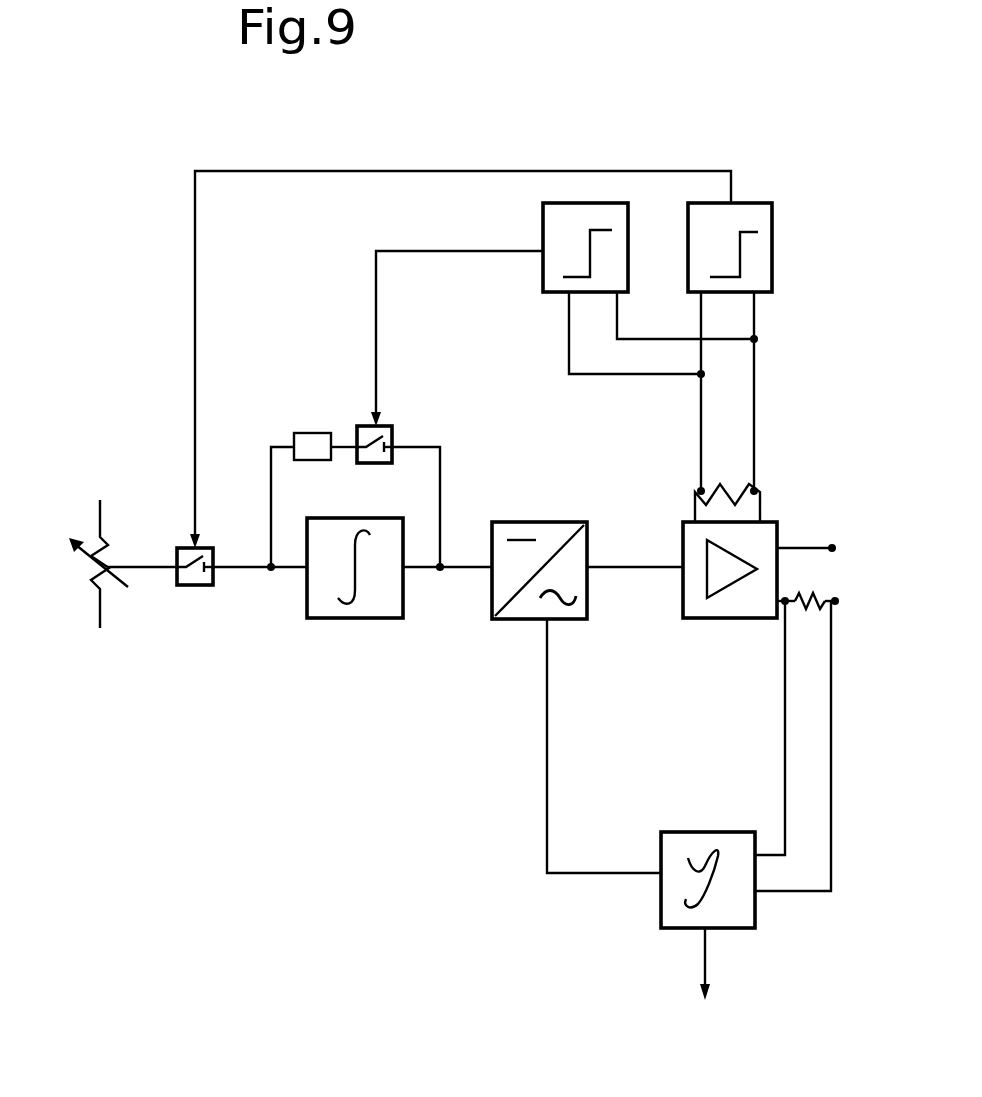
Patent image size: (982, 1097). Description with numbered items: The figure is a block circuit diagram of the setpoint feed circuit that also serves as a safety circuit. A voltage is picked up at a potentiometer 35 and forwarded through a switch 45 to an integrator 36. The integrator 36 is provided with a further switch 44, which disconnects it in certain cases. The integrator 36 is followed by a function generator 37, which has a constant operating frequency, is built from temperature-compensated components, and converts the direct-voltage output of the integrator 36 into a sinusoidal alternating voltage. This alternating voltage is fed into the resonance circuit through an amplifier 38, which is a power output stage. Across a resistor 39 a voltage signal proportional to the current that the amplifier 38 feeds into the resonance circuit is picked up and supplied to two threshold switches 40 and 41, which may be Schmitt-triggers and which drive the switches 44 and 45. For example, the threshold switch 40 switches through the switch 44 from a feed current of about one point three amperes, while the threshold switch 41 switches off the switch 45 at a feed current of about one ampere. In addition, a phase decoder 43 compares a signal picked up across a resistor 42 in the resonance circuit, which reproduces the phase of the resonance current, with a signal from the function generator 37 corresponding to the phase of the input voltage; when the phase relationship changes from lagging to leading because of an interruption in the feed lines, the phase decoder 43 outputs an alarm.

The potentiometer 35 is at (95, 590).
The integrator 36 is at (369, 607).
The function generator 37 is at (520, 612).
The amplifier 38 is at (755, 540).
The resistor 39 is at (728, 490).
The threshold switch 40 is at (553, 272).
The threshold switch 41 is at (757, 250).
The resistor 42 is at (820, 592).
The phase decoder 43 is at (740, 898).
The switch 44 is at (393, 430).
The switch 45 is at (195, 588).